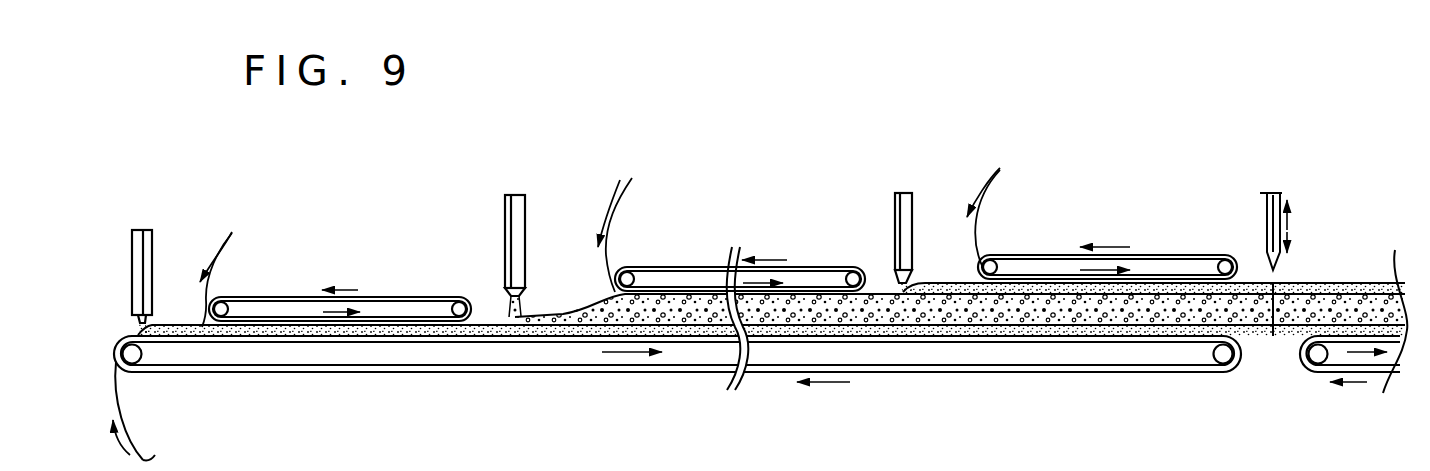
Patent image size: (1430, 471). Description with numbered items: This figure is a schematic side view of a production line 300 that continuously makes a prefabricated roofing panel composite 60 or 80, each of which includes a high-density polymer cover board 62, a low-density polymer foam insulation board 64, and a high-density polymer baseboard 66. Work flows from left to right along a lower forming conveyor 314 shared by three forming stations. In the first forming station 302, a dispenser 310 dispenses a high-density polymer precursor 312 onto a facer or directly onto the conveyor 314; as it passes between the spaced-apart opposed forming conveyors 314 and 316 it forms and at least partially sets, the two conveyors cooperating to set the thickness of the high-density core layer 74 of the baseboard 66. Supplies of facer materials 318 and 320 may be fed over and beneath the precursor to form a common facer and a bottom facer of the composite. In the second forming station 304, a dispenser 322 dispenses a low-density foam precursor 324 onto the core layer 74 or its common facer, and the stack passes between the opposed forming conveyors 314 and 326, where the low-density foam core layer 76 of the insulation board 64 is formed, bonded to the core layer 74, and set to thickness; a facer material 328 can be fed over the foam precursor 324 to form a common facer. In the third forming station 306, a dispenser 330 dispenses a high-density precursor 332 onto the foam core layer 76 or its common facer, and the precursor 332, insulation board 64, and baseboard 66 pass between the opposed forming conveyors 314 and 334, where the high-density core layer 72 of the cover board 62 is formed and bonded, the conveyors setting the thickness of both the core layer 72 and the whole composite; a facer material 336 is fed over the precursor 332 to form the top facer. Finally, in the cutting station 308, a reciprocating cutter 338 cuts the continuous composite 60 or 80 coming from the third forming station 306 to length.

The production line 300 is at (1105, 107).
The first forming station 302 is at (337, 231).
The second forming station 304 is at (713, 205).
The third forming station 306 is at (1052, 205).
The cutting station 308 is at (1308, 197).
The dispenser 310 is at (128, 258).
The high-density polymer or predominantly polymer material precursor 312 is at (155, 327).
The forming conveyor 314 is at (620, 377).
The forming conveyor 316 is at (383, 297).
The facer material 318 is at (232, 232).
The facer material 320 is at (125, 418).
The dispenser 322 is at (505, 240).
The low-density polymer or predominantly polymer material foam precursor 324 is at (537, 313).
The forming conveyor 326 is at (800, 267).
The facer material 328 is at (610, 220).
The dispenser 330 is at (895, 245).
The high-density polymer or predominantly polymer material precursor 332 is at (937, 288).
The forming conveyor 334 is at (1152, 255).
The facer material 336 is at (1038, 143).
The reciprocating cutter 338 is at (1262, 195).
The prefabricated roofing panel composite 60 is at (1317, 257).
The prefabricated roofing panel composite 80 is at (1337, 309).
The cover board 62 is at (1350, 280).
The foam insulation board 64 is at (1013, 303).
The baseboard 66 is at (1255, 343).
The core layer 72 is at (1247, 280).
The core layer 74 is at (947, 327).
The foam core layer 76 is at (1120, 303).